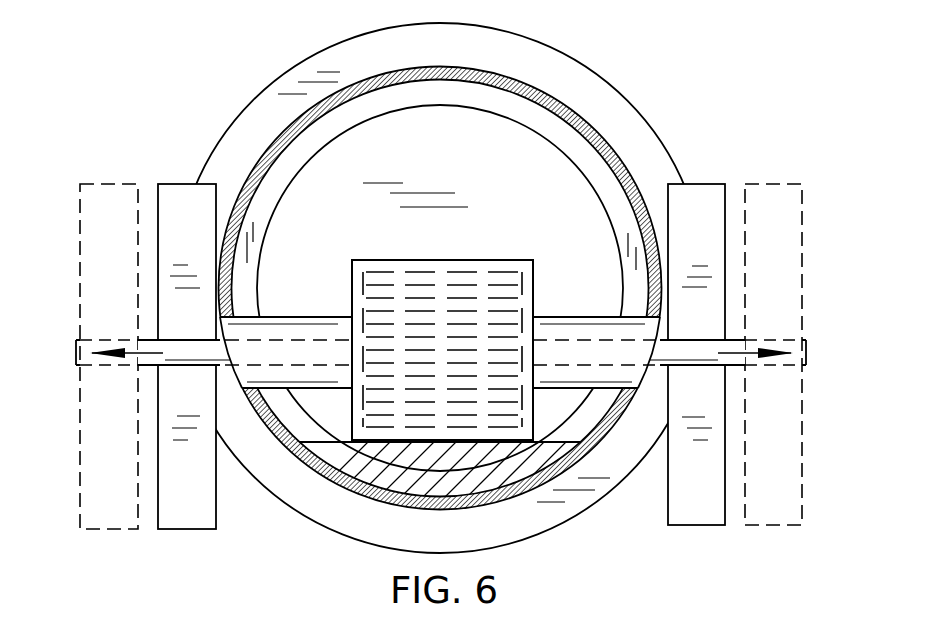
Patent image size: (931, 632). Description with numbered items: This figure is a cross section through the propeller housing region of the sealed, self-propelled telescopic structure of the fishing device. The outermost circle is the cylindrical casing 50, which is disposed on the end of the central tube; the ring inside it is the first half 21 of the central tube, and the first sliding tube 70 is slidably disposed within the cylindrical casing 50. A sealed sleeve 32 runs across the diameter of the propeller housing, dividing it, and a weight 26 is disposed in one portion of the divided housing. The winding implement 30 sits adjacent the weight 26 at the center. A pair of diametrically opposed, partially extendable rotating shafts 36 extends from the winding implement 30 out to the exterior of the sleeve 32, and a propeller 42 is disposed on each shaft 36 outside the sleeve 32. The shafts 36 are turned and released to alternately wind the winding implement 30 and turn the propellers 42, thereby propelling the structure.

The first half 21 is at (610, 143).
The weight 26 is at (532, 458).
The winding implement 30 is at (503, 262).
The sealed sleeve 32 is at (310, 317).
The rotating shaft 36 is at (183, 365).
The propeller 42 is at (185, 197).
The cylindrical casing 50 is at (612, 88).
The first sliding tube 70 is at (340, 133).